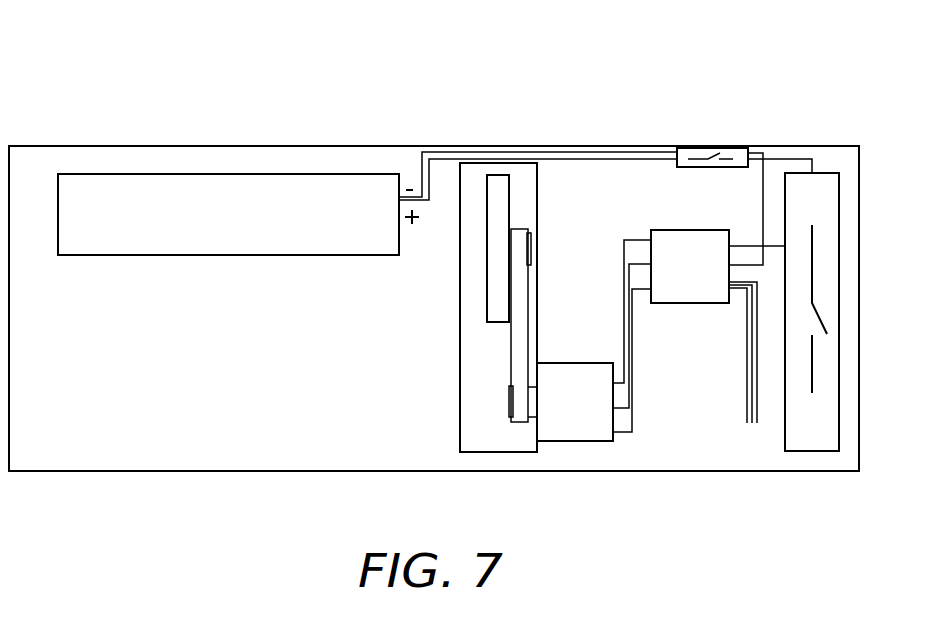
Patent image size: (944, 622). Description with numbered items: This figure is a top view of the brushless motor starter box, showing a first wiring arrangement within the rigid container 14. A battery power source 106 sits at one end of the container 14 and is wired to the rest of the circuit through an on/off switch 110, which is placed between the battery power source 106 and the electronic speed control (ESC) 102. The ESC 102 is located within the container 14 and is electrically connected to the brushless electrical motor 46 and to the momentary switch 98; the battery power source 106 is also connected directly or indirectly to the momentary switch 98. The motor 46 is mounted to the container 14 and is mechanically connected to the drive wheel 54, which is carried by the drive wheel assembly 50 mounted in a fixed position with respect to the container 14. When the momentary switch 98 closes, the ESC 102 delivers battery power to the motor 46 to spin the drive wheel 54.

The rigid container 14 is at (277, 145).
The battery power source 106 is at (97, 192).
The on/off switch 110 is at (738, 148).
The drive wheel assembly 50 is at (465, 175).
The drive wheel 54 is at (505, 178).
The brushless electrical motor 46 is at (575, 419).
The electronic speed control 102 is at (660, 238).
The momentary switch 98 is at (828, 193).